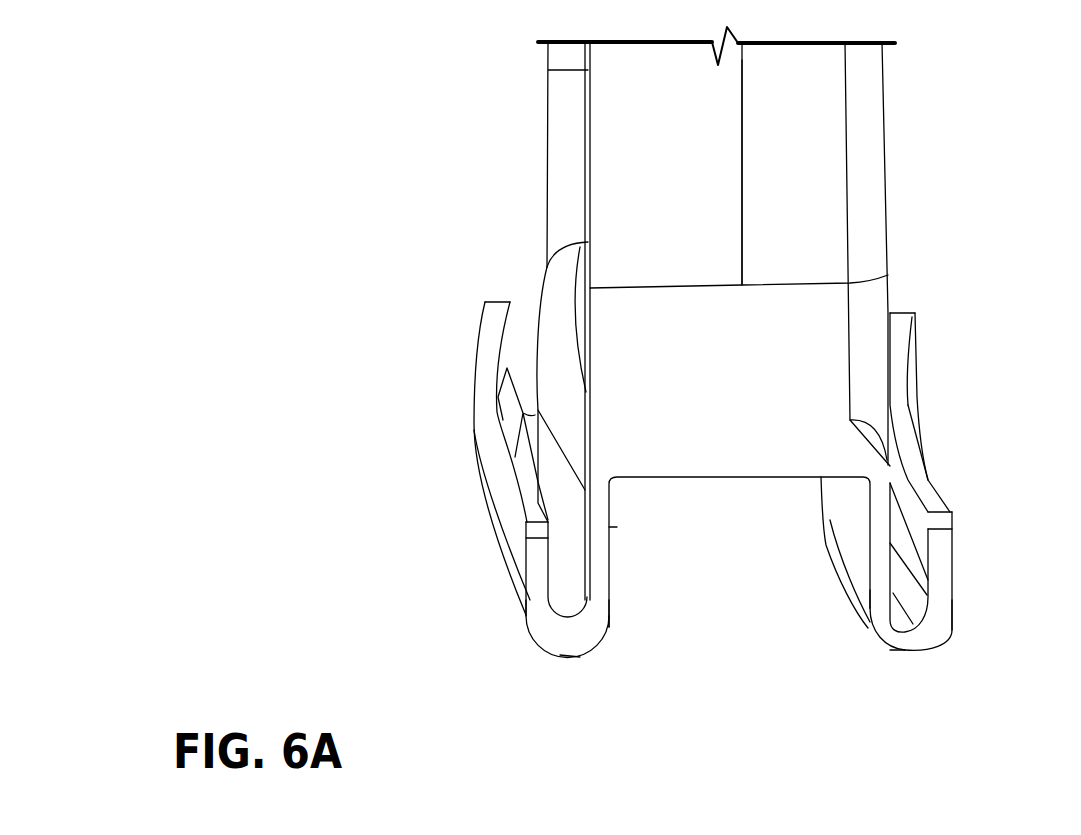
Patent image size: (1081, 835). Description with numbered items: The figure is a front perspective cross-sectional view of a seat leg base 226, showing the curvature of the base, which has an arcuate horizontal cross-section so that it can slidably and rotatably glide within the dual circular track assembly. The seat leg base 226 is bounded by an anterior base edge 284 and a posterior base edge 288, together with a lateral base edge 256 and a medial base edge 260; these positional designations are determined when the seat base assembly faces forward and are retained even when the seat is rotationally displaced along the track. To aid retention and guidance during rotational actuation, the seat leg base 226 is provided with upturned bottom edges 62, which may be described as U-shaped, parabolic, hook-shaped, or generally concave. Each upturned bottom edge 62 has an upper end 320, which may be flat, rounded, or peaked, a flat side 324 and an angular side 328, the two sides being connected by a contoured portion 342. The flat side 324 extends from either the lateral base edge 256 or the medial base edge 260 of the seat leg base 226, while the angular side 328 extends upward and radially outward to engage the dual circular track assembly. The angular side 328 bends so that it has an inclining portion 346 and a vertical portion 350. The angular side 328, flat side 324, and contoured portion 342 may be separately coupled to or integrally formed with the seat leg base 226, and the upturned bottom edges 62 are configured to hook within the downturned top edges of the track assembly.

The seat leg base 226 is at (950, 153).
The anterior base edge 284 is at (737, 396).
The posterior base edge 288 is at (547, 267).
The lateral base edge 256 is at (477, 343).
The upper end 320 is at (497, 440).
The medial base edge 260 is at (912, 428).
The vertical portion 350 is at (527, 552).
The angular side 328 is at (548, 597).
The flat side 324 is at (607, 526).
The inclining portion 346 is at (537, 623).
The contoured portion 342 is at (581, 658).
The upturned bottom edges 62 is at (473, 578).